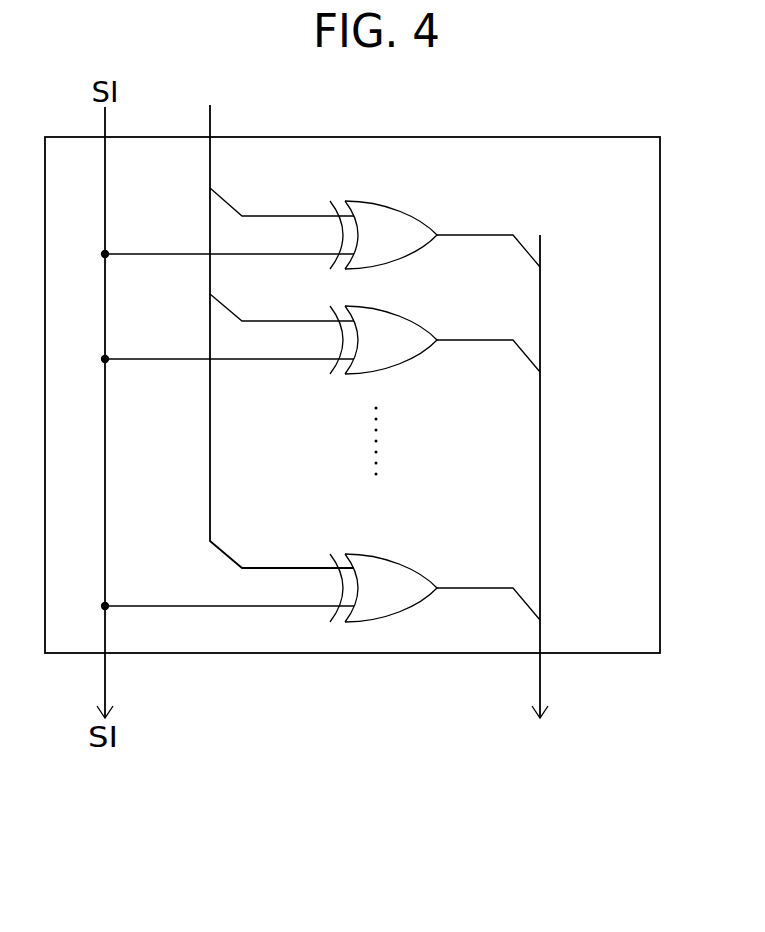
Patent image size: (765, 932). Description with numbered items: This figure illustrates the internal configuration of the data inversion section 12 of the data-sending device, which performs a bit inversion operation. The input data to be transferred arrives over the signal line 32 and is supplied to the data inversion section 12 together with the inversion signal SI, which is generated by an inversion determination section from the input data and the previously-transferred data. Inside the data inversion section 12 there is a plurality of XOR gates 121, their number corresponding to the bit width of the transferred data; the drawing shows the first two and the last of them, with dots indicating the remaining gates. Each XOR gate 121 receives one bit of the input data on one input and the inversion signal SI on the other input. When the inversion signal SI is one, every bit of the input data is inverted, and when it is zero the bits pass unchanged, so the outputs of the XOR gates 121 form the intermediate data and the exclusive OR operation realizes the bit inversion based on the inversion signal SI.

The data inversion section 12 is at (553, 136).
The XOR gate 121 is at (442, 207).
The signal line 32 is at (220, 170).